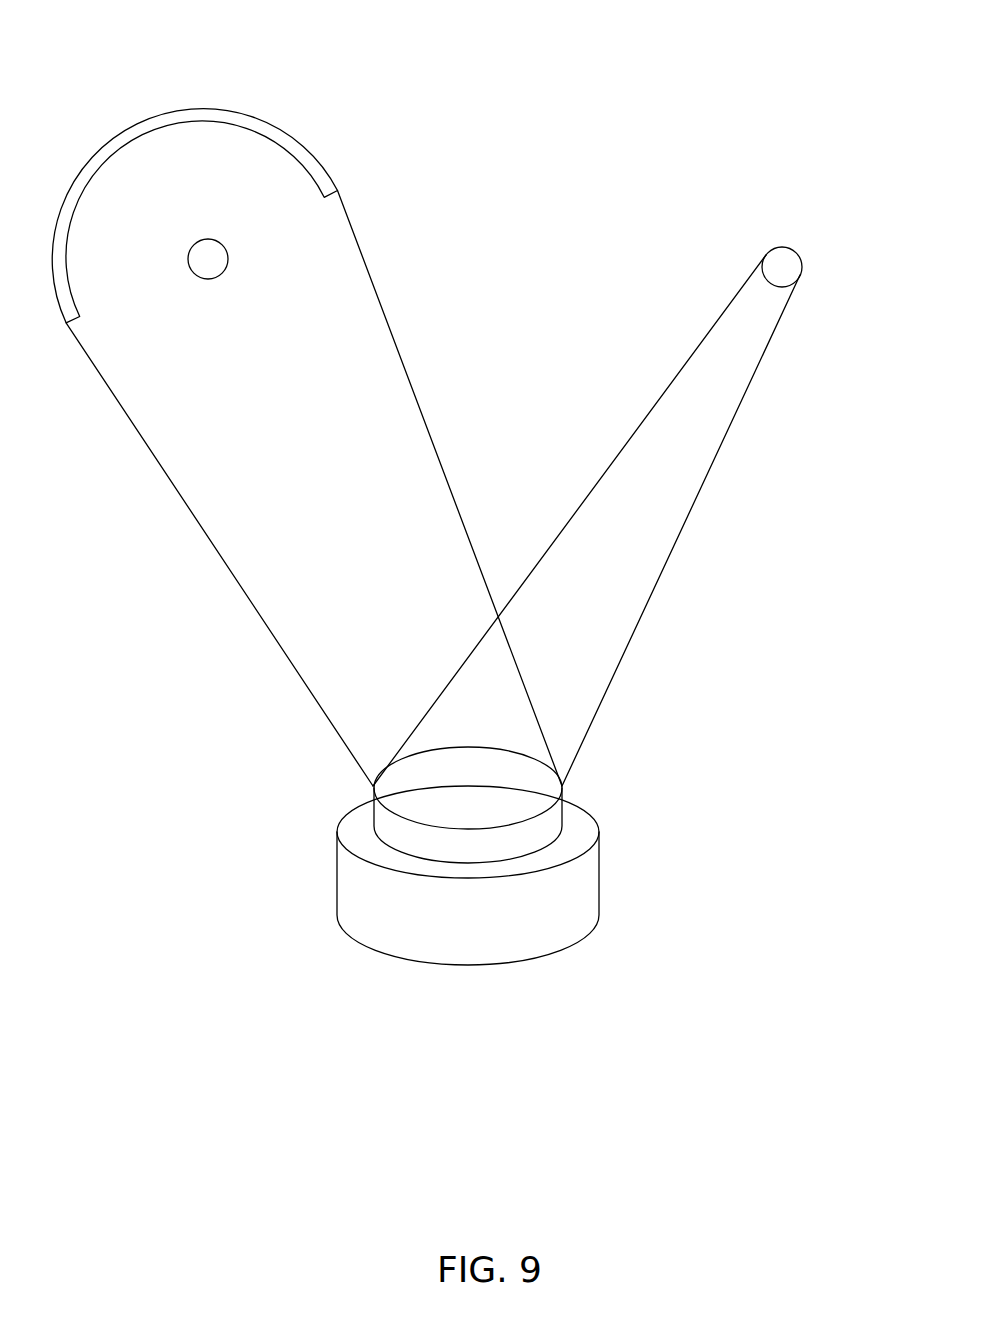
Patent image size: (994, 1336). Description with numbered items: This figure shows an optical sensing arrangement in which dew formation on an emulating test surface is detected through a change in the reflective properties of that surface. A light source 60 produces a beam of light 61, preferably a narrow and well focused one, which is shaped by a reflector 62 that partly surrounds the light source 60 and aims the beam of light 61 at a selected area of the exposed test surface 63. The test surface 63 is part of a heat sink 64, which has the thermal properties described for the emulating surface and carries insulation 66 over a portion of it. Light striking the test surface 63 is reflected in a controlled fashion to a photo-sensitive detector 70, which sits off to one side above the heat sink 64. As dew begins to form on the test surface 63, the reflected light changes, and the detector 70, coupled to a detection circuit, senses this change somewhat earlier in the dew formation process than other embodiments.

The light source 60 is at (226, 252).
The beam of light 61 is at (365, 412).
The reflector 62 is at (202, 108).
The test surface 63 is at (492, 790).
The heat sink 64 is at (513, 843).
The insulation 66 is at (508, 933).
The photo-sensitive detector 70 is at (779, 247).